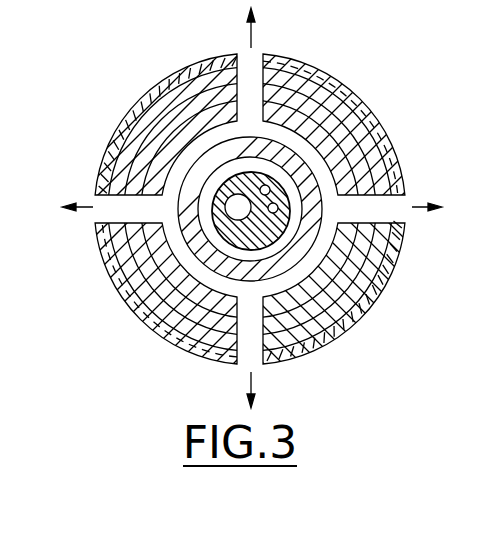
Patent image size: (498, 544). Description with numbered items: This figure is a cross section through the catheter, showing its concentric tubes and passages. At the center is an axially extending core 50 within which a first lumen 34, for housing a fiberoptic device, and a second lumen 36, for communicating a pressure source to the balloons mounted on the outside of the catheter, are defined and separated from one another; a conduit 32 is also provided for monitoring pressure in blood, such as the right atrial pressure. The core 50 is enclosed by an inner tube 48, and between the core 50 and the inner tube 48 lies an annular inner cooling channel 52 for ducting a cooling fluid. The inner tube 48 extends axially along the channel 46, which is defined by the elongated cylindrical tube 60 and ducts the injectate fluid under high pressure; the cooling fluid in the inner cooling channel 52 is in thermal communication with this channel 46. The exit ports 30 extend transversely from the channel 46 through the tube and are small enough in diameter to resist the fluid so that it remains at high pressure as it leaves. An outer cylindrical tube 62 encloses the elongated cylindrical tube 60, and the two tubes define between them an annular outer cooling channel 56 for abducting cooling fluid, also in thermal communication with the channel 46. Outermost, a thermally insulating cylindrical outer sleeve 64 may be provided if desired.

The exit ports 30 is at (101, 212).
The conduit 32 is at (234, 199).
The first lumen 34 is at (278, 204).
The second lumen 36 is at (269, 186).
The channel 46 is at (328, 333).
The inner tube 48 is at (221, 329).
The core 50 is at (168, 318).
The annular inner cooling channel 52 is at (212, 233).
The annular outer cooling channel 56 is at (370, 245).
The elongated cylindrical tube 60 is at (358, 283).
The outer cylindrical tube 62 is at (376, 190).
The thermally insulating cylindrical outer sleeve 64 is at (297, 73).